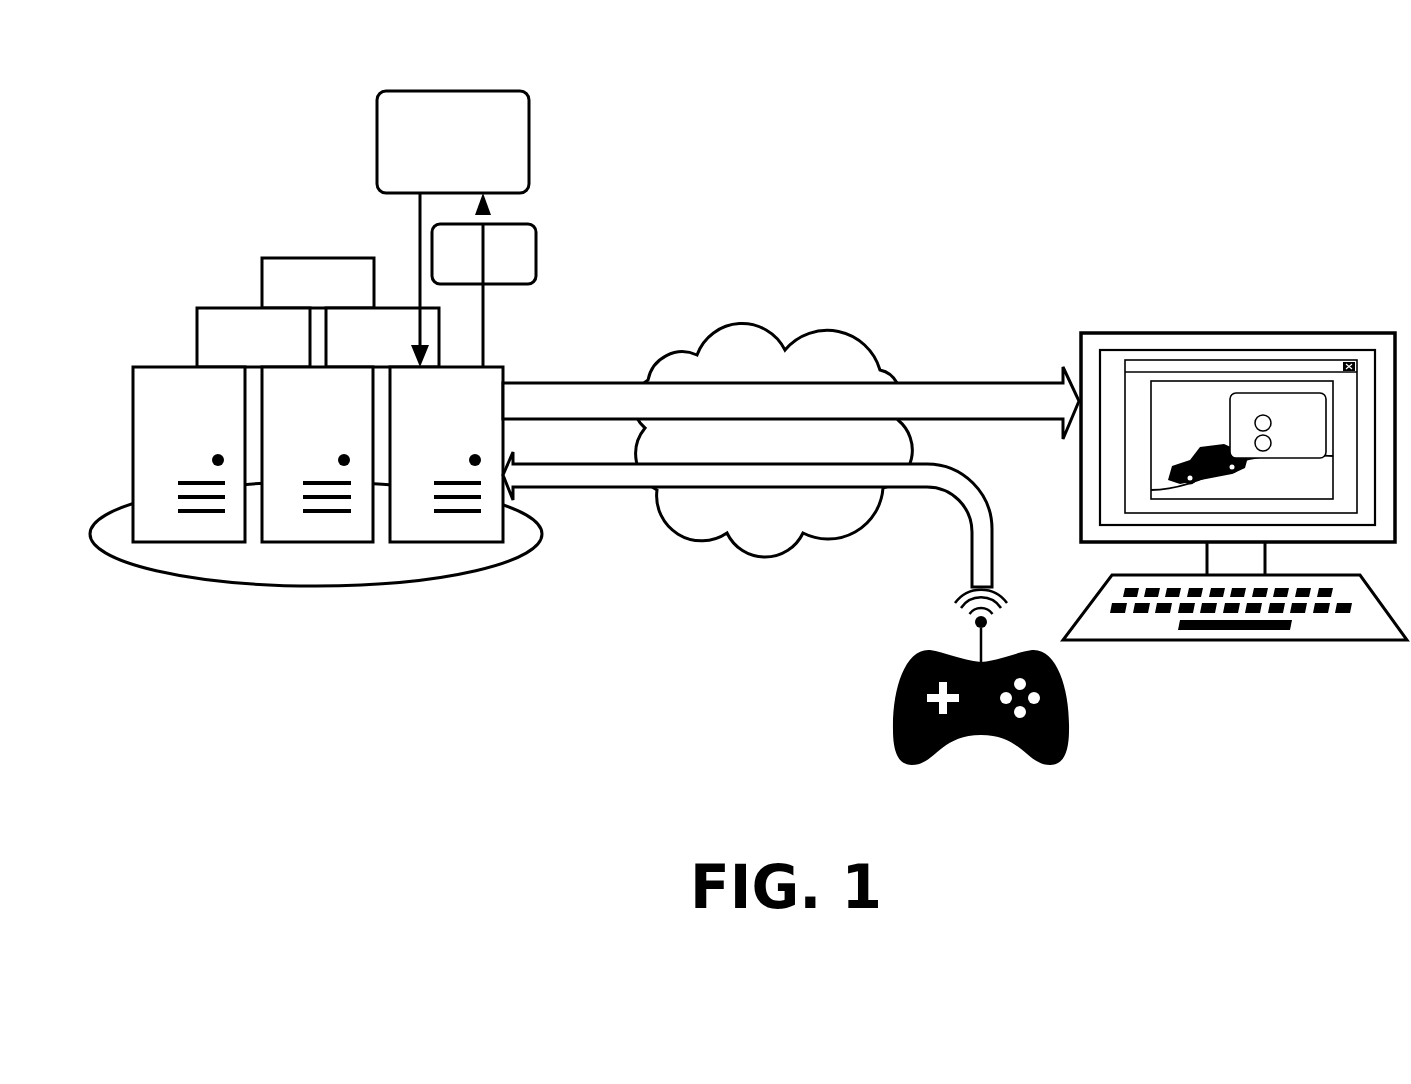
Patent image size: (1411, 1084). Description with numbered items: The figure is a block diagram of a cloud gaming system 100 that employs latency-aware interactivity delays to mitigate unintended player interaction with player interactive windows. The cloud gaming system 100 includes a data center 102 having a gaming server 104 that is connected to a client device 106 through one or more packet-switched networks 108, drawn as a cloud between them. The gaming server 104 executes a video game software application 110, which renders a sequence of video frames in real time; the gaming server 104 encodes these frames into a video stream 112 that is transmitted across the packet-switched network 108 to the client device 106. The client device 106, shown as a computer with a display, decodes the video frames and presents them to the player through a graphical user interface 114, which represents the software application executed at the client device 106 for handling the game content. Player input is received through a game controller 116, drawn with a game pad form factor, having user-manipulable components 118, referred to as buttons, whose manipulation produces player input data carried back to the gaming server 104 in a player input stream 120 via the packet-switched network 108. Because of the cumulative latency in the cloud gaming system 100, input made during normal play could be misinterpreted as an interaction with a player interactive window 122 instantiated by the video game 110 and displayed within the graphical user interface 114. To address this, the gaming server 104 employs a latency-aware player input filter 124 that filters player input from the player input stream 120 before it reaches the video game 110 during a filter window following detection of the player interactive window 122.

The cloud gaming system 100 is at (988, 267).
The data center 102 is at (316, 420).
The gaming server 104 is at (435, 431).
The client device 106 is at (1235, 453).
The packet-switched network 108 is at (792, 456).
The video game software application 110 is at (438, 169).
The video stream 112 is at (420, 222).
The graphical user interface 114 is at (1170, 380).
The game controller 116 is at (969, 707).
The user-manipulable components 118 is at (932, 697).
The player input stream 120 is at (484, 315).
The player interactive window 122 is at (1280, 393).
The latency-aware player input filter 124 is at (468, 282).